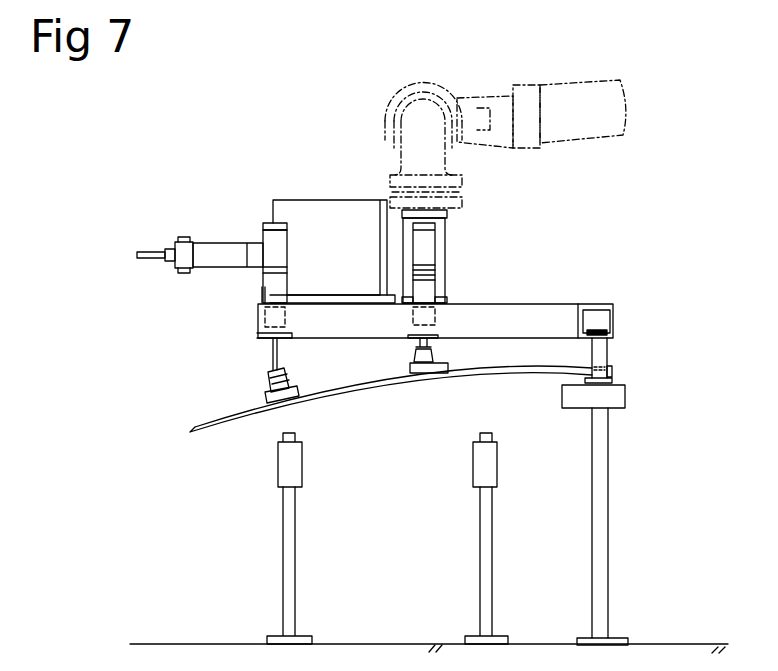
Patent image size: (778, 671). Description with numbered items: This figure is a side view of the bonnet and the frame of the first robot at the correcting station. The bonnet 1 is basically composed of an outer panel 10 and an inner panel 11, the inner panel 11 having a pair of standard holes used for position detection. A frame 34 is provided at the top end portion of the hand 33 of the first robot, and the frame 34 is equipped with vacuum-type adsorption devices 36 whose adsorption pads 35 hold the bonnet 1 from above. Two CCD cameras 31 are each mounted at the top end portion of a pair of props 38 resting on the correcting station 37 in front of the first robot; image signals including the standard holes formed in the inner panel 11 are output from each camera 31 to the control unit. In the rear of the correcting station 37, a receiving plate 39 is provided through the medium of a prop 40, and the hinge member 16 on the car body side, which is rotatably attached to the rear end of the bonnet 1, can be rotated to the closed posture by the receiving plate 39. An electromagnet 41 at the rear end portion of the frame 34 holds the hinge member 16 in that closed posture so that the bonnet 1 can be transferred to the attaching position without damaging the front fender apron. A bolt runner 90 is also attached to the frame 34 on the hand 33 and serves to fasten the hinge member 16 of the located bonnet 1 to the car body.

The bonnet 1 is at (217, 418).
The outer panel 10 is at (490, 368).
The inner panel 11 is at (362, 392).
The hinge member on the car body side 16 is at (620, 373).
The CCD camera 31 is at (300, 470).
The hand 33 is at (567, 85).
The frame 34 is at (560, 304).
The adsorption pad 35 is at (448, 374).
The adsorption device 36 is at (438, 277).
The correcting station 37 is at (550, 525).
The prop 38 is at (295, 562).
The receiving plate 39 is at (625, 395).
The prop 40 is at (608, 507).
The electromagnet 41 is at (607, 352).
The bolt runner 90 is at (248, 210).